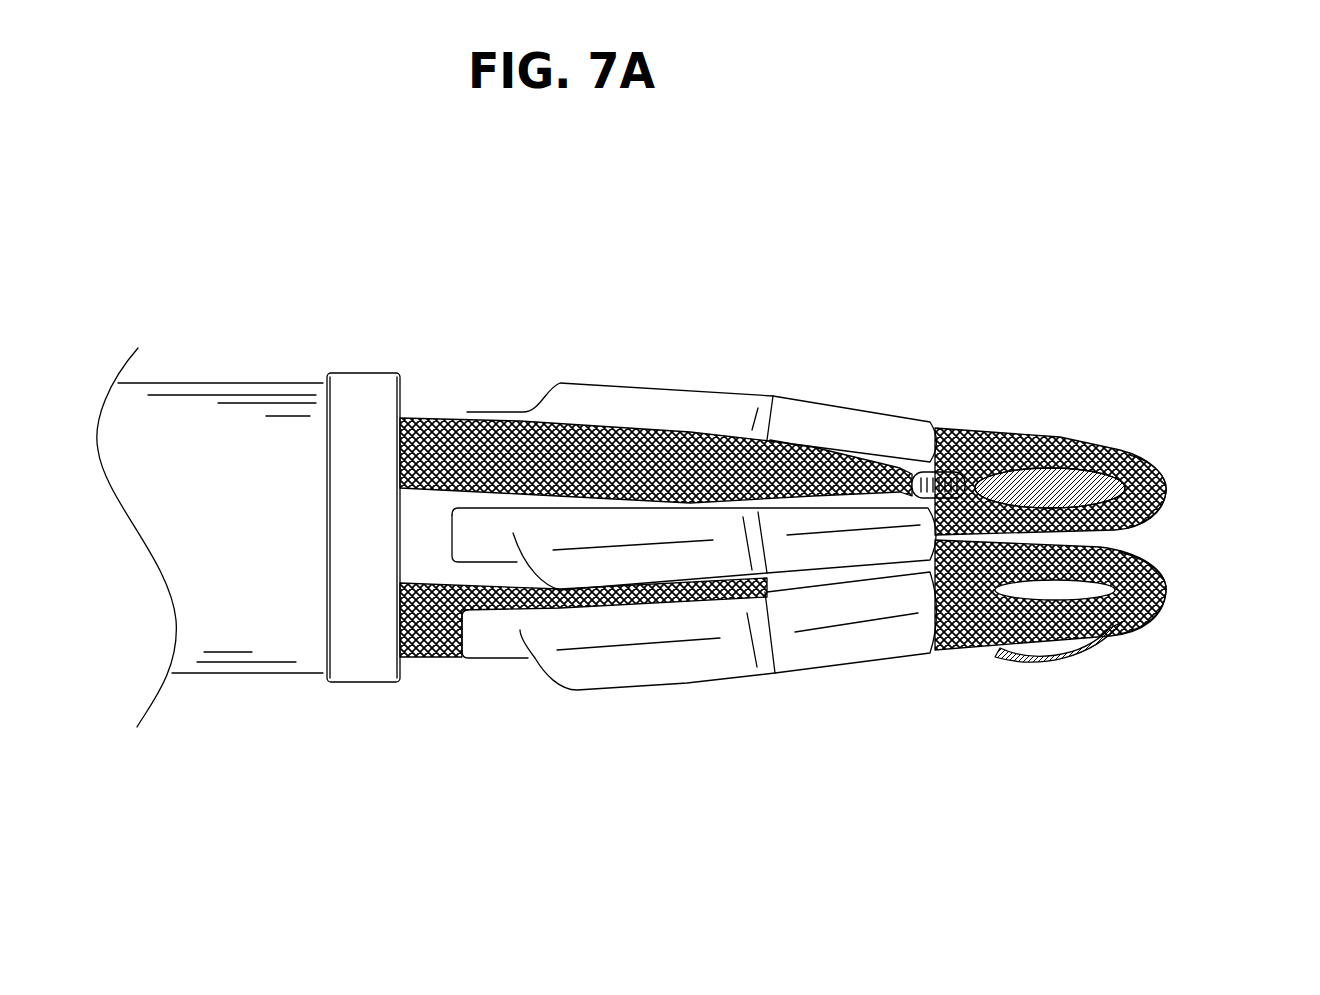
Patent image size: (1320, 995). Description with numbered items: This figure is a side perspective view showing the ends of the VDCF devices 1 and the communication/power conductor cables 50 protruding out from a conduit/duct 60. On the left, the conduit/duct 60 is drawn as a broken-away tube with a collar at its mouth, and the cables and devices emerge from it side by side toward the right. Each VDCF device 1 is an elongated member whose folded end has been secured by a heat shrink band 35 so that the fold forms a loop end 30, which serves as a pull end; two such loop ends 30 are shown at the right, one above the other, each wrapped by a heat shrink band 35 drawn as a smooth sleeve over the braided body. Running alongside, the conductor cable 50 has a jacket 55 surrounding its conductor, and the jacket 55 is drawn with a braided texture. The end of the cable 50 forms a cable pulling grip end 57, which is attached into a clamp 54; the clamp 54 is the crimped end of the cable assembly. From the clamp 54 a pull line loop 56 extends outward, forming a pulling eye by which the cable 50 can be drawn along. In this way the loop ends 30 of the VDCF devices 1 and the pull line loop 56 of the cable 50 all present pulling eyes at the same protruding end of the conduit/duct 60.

The VDCF device 1 is at (854, 508).
The loop end 30 is at (1153, 492).
The heat shrink band 35 is at (692, 663).
The communication/power conductor cable 50 is at (854, 387).
The clamp 54 is at (1122, 419).
The jacket 55 is at (443, 442).
The pull line loop 56 is at (1118, 455).
The cable pulling grip end 57 is at (873, 468).
The conduit/duct 60 is at (277, 388).